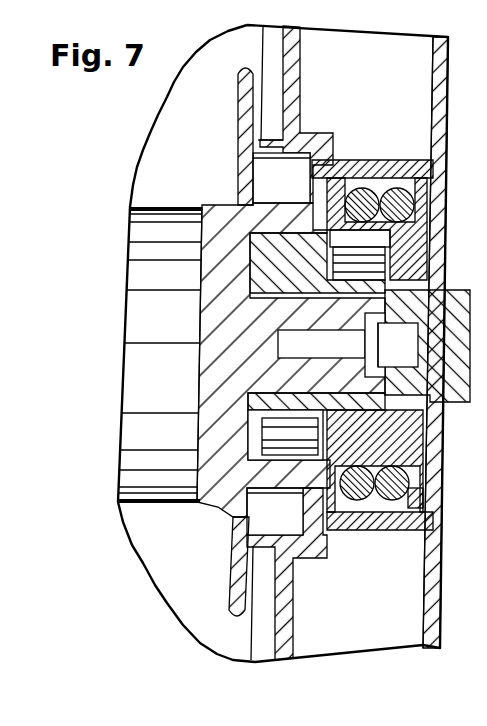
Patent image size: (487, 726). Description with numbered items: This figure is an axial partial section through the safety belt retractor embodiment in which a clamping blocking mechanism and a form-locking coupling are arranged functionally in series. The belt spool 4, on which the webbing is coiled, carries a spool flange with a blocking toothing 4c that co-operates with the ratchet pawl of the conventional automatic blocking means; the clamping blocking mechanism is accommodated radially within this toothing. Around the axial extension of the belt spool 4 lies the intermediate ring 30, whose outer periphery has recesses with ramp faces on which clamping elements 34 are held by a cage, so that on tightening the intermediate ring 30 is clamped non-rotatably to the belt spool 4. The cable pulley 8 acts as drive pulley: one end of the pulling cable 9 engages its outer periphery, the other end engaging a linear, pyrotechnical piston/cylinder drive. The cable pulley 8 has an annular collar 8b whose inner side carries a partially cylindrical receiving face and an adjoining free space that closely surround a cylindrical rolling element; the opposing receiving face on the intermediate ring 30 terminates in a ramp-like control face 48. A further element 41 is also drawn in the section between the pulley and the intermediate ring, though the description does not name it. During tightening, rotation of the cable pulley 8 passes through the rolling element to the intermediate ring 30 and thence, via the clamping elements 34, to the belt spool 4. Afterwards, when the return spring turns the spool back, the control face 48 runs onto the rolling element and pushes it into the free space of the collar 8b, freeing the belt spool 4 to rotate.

The belt spool 4 is at (168, 227).
The blocking toothing 4c is at (243, 537).
The cable pulley 8 is at (407, 441).
The annular collar 8b is at (357, 200).
The pulling cable 9 is at (413, 490).
The intermediate ring 30 is at (267, 250).
The clamping elements 34 is at (218, 507).
The spring element 41 is at (390, 263).
The ramp-like control face 48 is at (375, 240).